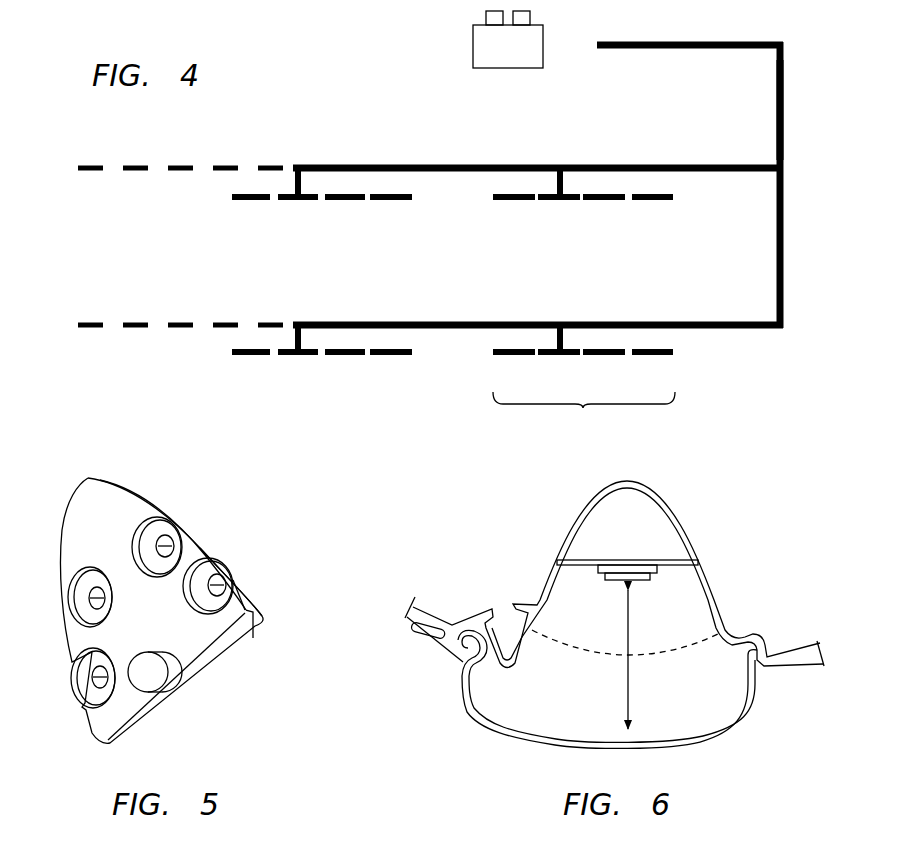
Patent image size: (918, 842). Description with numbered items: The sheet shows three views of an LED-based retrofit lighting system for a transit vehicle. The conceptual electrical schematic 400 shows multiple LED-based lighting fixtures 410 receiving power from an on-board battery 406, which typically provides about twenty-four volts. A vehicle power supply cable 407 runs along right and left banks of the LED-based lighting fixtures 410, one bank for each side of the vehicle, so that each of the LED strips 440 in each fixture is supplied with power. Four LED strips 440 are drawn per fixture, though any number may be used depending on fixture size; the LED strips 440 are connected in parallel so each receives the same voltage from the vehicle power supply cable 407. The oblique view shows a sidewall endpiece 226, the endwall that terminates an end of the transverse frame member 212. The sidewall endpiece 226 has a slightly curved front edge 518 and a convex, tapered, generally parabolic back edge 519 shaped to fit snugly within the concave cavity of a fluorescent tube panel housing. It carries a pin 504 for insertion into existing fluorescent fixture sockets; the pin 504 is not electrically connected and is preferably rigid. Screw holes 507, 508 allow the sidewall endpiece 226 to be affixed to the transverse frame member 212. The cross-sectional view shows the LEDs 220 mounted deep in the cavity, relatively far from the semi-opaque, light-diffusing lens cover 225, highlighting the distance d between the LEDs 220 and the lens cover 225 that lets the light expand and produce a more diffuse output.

In FIG. 4, the lighting system wiring diagram 400 is at (384, 95).
In FIG. 4, the on-board battery 406 is at (473, 45).
In FIG. 4, the vehicle power supply cable 407 is at (783, 125).
In FIG. 4, the LED strip 440 is at (245, 202).
In FIG. 4, the LED-based lighting fixture 410 is at (584, 414).
In FIG. 5, the convex tapered back edge 519 is at (71, 476).
In FIG. 5, the slightly curved front edge 518 is at (203, 706).
In FIG. 5, the sidewall endpiece 226 is at (268, 587).
In FIG. 5, the screw hole 507 is at (168, 545).
In FIG. 5, the screw hole 508 is at (96, 600).
In FIG. 5, the pin 504 is at (153, 693).
In FIG. 6, the lens cover 225 is at (463, 722).
In FIG. 6, the transverse frame member 212 is at (677, 560).
In FIG. 6, the LED 220 is at (650, 581).